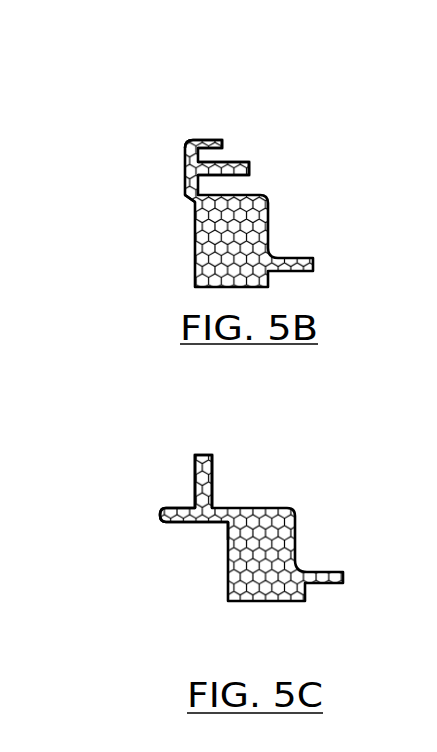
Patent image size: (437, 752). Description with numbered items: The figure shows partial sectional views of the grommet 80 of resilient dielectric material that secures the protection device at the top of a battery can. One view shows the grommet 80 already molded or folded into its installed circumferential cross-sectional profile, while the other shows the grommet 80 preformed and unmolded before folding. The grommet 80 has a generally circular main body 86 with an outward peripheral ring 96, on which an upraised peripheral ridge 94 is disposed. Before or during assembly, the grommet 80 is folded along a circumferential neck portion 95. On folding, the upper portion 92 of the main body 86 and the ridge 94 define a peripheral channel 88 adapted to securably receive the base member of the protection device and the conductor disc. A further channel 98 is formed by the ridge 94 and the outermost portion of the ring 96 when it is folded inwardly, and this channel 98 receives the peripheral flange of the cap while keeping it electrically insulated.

In FIG. 5B, the grommet 80 is at (188, 268).
In FIG. 5C, the main body 86 is at (263, 573).
In FIG. 5B, the peripheral channel 88 is at (200, 183).
In FIG. 5B, the upper portion 92 is at (237, 193).
In FIG. 5B, the upraised peripheral ridge 94 is at (258, 162).
In FIG. 5C, the upraised peripheral ridge 94 is at (207, 477).
In FIG. 5B, the circumferential neck portion 95 is at (188, 200).
In FIG. 5C, the circumferential neck portion 95 is at (225, 528).
In FIG. 5B, the outward peripheral ring 96 is at (207, 140).
In FIG. 5C, the outward peripheral ring 96 is at (173, 515).
In FIG. 5B, the channel 98 is at (215, 153).